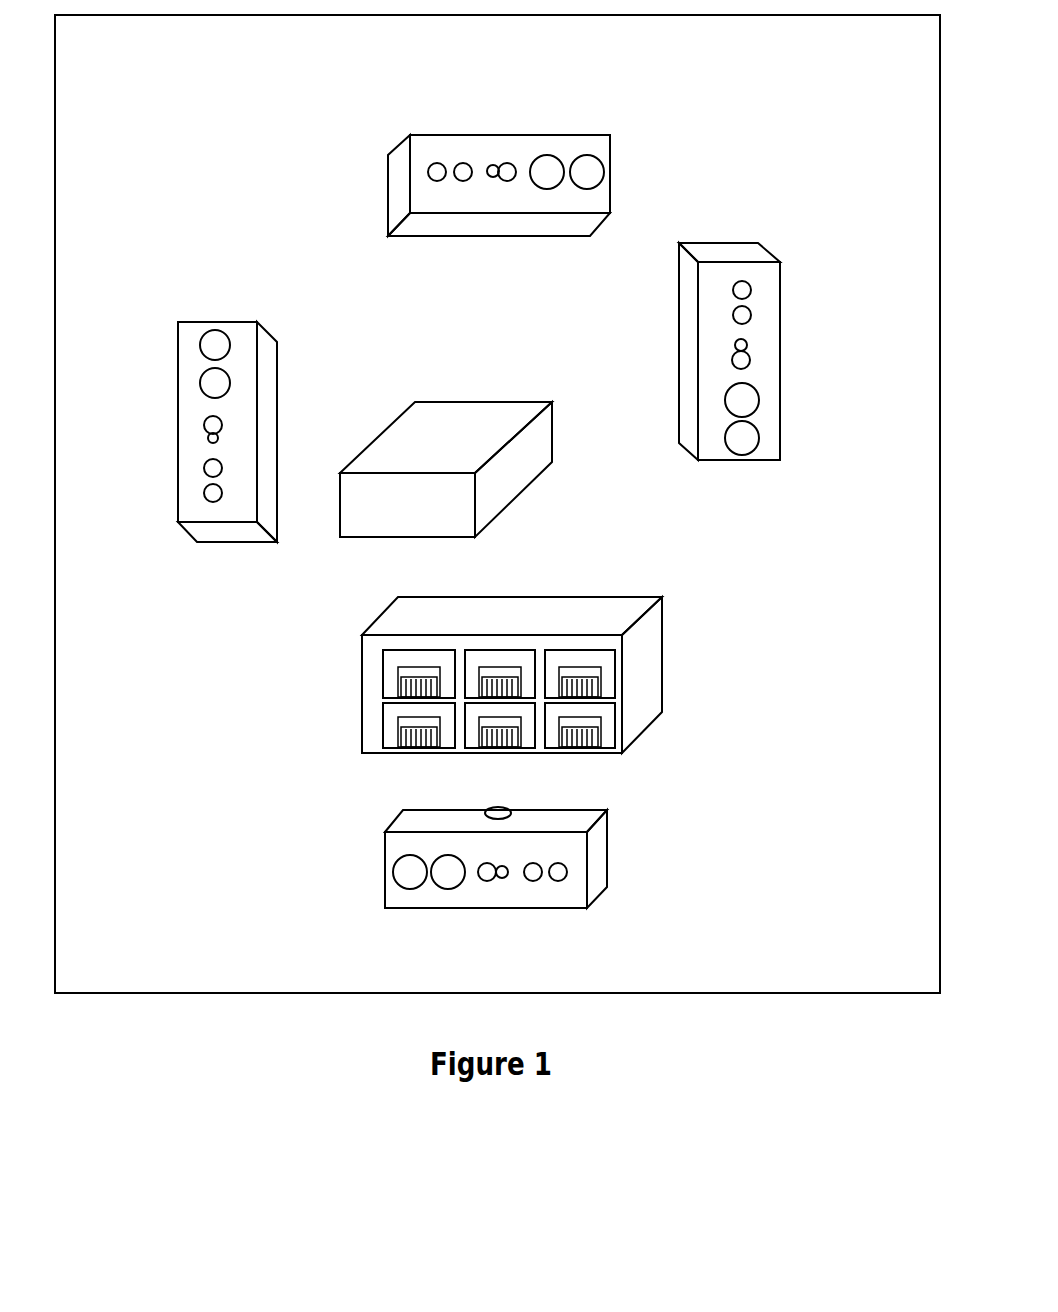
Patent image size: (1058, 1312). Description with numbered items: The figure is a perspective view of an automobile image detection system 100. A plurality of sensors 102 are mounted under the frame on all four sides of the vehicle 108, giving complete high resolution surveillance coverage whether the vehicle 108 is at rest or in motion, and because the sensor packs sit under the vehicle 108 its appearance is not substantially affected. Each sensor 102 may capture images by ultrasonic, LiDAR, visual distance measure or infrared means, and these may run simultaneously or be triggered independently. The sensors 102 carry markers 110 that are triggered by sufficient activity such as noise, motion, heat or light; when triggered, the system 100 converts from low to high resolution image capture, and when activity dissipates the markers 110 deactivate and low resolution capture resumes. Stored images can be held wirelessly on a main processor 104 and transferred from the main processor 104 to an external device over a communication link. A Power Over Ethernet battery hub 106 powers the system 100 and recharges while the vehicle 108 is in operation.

The system 100 is at (497, 596).
The sensors 102 is at (612, 122).
The main processor 104 is at (532, 490).
The Power Over Ethernet battery hub 106 is at (659, 729).
The vehicle 108 is at (185, 1000).
The markers 110 is at (496, 131).